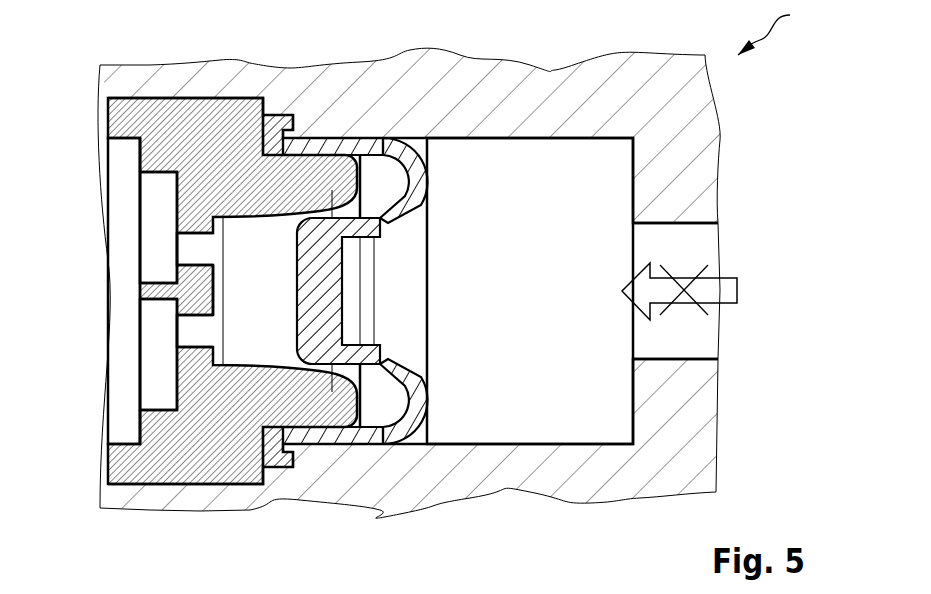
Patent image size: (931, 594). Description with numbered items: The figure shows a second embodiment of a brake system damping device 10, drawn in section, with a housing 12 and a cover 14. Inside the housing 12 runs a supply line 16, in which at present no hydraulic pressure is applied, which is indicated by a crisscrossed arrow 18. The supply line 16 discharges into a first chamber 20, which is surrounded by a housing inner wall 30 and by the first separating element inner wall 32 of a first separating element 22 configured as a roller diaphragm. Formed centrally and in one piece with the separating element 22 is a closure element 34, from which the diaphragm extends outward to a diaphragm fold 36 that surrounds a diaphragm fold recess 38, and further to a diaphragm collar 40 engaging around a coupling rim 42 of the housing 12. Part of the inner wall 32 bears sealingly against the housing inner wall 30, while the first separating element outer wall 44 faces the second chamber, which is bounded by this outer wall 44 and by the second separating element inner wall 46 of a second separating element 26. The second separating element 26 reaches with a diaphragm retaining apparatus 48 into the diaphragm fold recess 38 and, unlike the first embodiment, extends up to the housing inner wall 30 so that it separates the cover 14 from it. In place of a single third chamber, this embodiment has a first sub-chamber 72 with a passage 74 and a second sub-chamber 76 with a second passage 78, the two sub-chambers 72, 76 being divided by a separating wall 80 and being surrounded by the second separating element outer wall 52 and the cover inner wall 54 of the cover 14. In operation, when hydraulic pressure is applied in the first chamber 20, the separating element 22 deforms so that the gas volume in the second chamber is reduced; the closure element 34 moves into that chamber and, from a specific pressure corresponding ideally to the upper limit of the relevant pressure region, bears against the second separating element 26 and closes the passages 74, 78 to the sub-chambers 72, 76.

The brake system damping device 10 is at (779, 28).
The housing 12 is at (680, 105).
The cover 14 is at (115, 192).
The supply line 16 is at (705, 245).
The crisscrossed arrow 18 is at (737, 293).
The first chamber 20 is at (610, 415).
The first separating element 22 is at (387, 231).
The second separating element 26 is at (112, 122).
The housing inner wall 30 is at (592, 140).
The first separating element inner wall 32 is at (345, 278).
The closure element 34 is at (318, 313).
The diaphragm fold 36 is at (427, 182).
The diaphragm fold recess 38 is at (398, 198).
The diaphragm collar 40 is at (280, 127).
The coupling rim 42 is at (295, 130).
The first separating element outer wall 44 is at (361, 291).
The second separating element inner wall 46 is at (243, 352).
The diaphragm retaining apparatus 48 is at (350, 165).
The second separating element outer wall 52 is at (170, 218).
The cover inner wall 54 is at (137, 132).
The first sub-chamber 72 is at (157, 232).
The passage 74 is at (190, 252).
The second sub-chamber 76 is at (165, 372).
The second passage 78 is at (165, 352).
The separating wall 80 is at (190, 333).